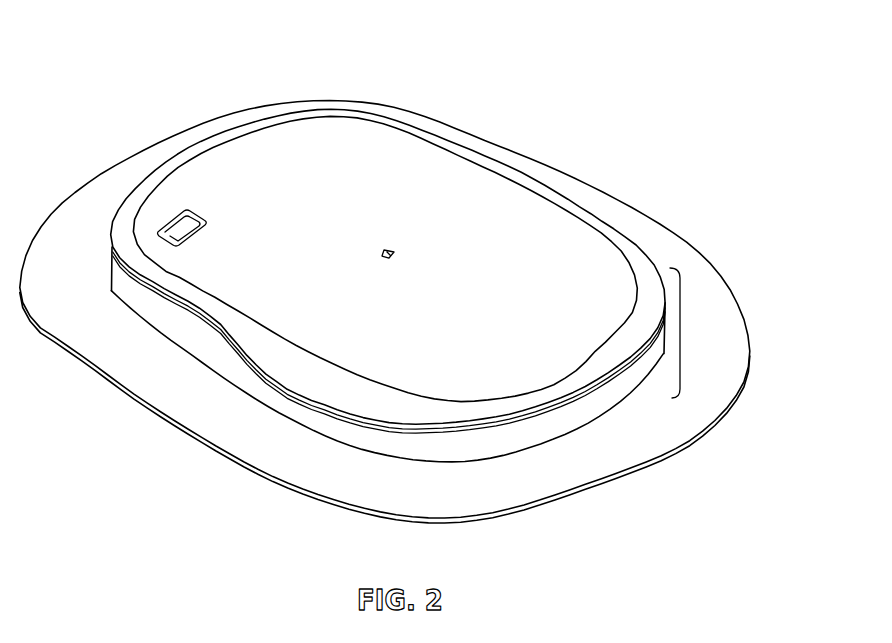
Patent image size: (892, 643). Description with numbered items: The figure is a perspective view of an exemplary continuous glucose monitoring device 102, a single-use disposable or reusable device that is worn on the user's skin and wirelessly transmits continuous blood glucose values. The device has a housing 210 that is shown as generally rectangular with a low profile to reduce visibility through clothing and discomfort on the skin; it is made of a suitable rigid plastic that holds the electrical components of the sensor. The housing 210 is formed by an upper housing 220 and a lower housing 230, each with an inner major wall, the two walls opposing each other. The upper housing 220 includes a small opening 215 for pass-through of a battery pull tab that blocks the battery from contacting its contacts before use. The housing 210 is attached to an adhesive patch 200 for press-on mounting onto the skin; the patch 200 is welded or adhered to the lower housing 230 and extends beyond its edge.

The continuous glucose monitoring device 102 is at (431, 301).
The adhesive patch 200 is at (647, 428).
The housing 210 is at (680, 332).
The small opening 215 is at (175, 218).
The upper housing 220 is at (382, 301).
The lower housing 230 is at (567, 413).